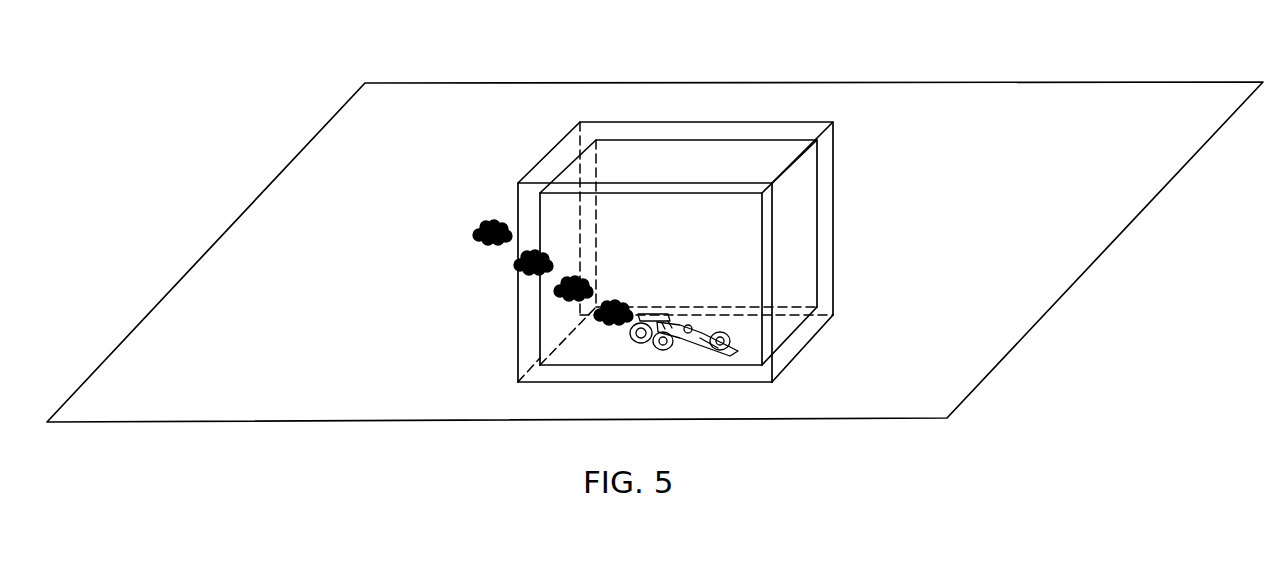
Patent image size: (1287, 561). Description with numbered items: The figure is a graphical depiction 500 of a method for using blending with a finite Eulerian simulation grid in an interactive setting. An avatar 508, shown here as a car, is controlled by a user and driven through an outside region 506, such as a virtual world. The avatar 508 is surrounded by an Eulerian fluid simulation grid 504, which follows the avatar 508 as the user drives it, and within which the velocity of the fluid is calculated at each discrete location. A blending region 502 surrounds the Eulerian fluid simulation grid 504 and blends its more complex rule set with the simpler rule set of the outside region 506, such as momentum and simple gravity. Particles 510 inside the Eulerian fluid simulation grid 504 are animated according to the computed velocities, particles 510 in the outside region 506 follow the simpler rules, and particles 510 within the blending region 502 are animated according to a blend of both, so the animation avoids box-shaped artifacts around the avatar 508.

The graphical depiction 500 is at (186, 78).
The blending region 502 is at (620, 120).
The Eulerian fluid simulation grid 504 is at (740, 138).
The outside region 506 is at (1133, 132).
The avatar 508 is at (707, 352).
The particles 510 is at (607, 325).